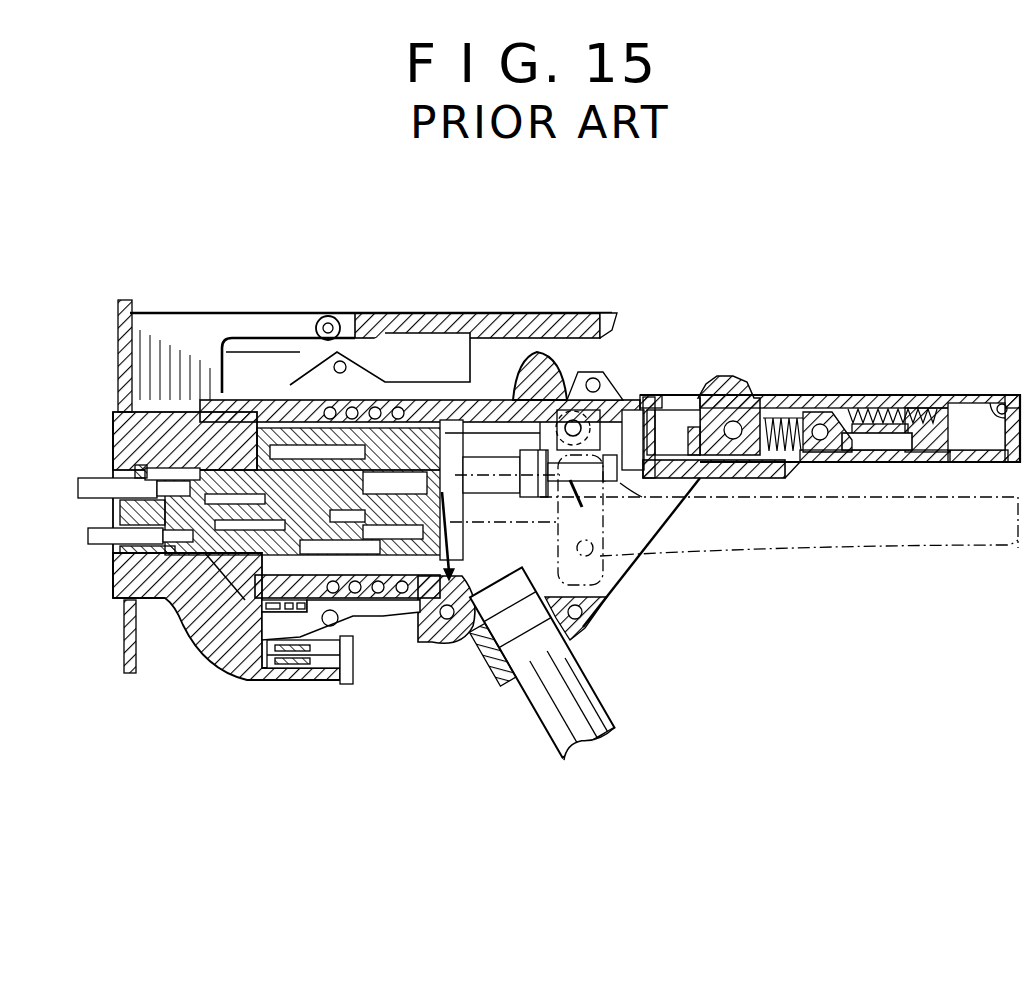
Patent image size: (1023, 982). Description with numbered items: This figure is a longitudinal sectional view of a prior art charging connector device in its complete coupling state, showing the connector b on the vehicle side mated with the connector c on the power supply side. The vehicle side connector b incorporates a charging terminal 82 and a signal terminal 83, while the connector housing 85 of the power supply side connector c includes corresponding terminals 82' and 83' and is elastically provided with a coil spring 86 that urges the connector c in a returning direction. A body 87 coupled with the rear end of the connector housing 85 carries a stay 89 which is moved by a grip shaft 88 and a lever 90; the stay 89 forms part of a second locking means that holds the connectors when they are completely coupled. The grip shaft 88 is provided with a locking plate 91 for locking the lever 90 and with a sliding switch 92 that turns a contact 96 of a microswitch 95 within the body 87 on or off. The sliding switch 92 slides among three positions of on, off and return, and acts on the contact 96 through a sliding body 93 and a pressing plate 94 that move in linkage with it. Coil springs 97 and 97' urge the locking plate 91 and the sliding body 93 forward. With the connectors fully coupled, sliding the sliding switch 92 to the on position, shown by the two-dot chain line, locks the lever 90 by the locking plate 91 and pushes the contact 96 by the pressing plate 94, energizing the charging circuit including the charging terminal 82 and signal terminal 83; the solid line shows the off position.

The charging terminal 82 is at (362, 422).
The terminal 82' is at (402, 441).
The signal terminal 83 is at (226, 643).
The terminal 83' is at (300, 696).
The connector housing 85 is at (347, 425).
The coil spring 86 is at (385, 612).
The body 87 is at (612, 600).
The grip shaft 88 is at (822, 393).
The stay 89 is at (512, 580).
The lever 90 is at (946, 550).
The locking plate 91 is at (672, 378).
The sliding switch 92 is at (700, 375).
The sliding body 93 is at (745, 477).
The pressing plate 94 is at (665, 478).
The microswitch 95 is at (500, 472).
The contact 96 is at (625, 405).
The coil spring 97 is at (847, 508).
The coil spring 97' is at (899, 370).
The connector on vehicle side b is at (98, 440).
The connector on power supply side c is at (962, 352).